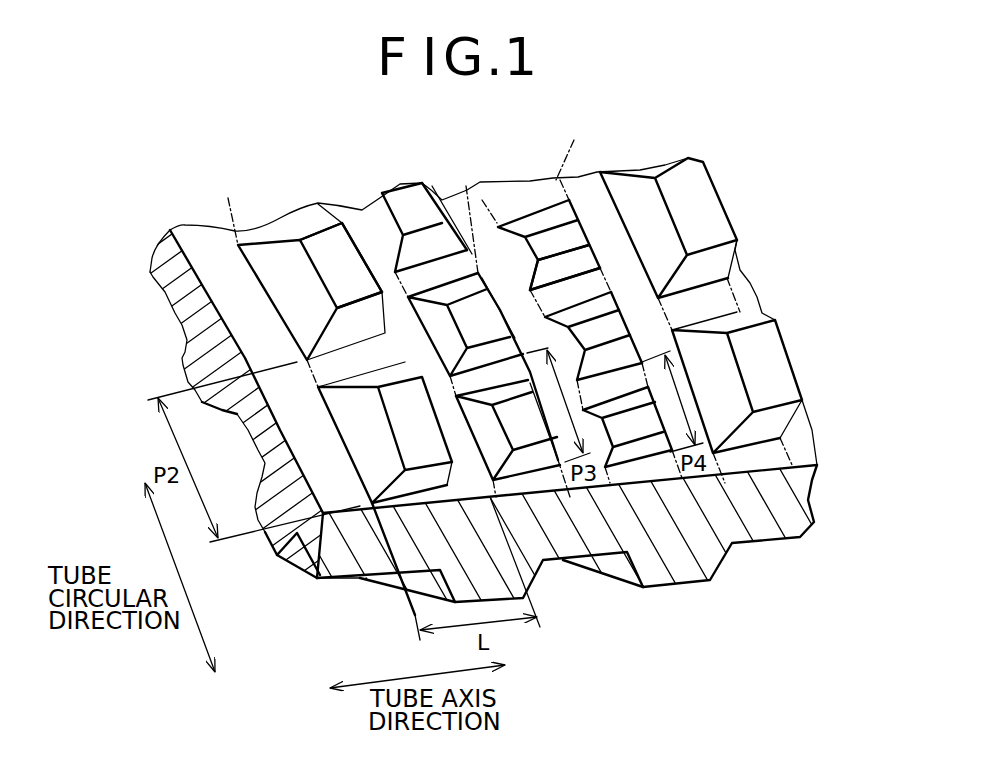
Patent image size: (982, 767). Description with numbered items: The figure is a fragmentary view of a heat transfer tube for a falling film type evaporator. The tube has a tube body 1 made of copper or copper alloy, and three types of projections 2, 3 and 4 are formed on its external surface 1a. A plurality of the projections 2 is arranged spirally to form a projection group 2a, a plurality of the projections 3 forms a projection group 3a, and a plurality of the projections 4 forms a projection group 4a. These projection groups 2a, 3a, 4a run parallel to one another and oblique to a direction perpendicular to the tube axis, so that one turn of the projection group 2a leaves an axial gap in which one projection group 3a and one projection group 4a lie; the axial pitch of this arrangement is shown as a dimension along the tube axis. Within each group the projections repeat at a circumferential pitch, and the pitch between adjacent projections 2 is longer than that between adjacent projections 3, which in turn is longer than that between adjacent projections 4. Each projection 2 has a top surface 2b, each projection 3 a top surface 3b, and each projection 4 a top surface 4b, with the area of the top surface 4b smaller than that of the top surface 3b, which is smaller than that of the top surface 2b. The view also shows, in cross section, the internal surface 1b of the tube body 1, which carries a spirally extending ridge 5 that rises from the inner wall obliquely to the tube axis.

The tube body 1 is at (787, 516).
The external surface 1a is at (195, 242).
The internal surface 1b is at (182, 323).
The projection 2 is at (286, 262).
The projection group 2a is at (265, 280).
The top surface 2b is at (336, 250).
The projection 3 is at (400, 205).
The projection group 3a is at (536, 314).
The top surface 3b is at (413, 200).
The projection 4 is at (530, 223).
The projection group 4a is at (619, 296).
The top surface 4b is at (577, 237).
The ridge 5 is at (278, 542).